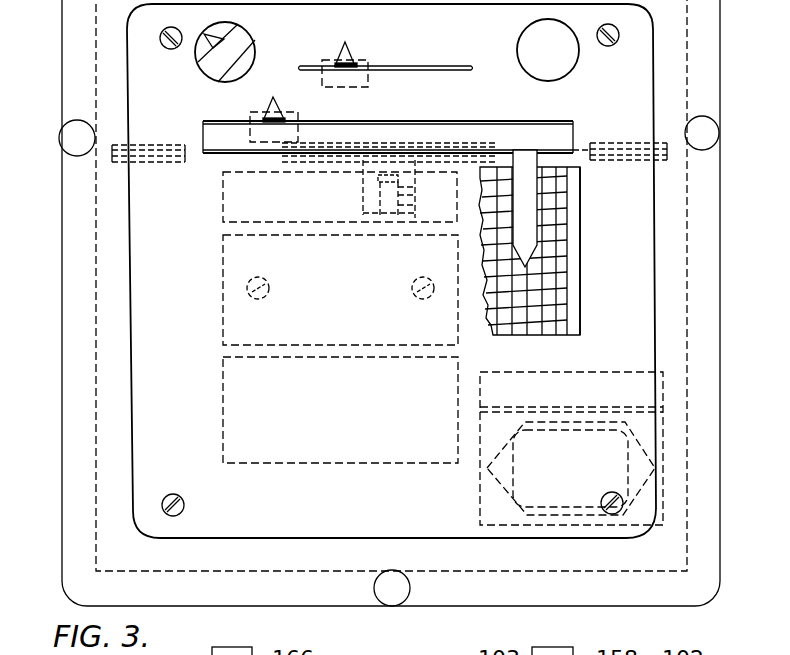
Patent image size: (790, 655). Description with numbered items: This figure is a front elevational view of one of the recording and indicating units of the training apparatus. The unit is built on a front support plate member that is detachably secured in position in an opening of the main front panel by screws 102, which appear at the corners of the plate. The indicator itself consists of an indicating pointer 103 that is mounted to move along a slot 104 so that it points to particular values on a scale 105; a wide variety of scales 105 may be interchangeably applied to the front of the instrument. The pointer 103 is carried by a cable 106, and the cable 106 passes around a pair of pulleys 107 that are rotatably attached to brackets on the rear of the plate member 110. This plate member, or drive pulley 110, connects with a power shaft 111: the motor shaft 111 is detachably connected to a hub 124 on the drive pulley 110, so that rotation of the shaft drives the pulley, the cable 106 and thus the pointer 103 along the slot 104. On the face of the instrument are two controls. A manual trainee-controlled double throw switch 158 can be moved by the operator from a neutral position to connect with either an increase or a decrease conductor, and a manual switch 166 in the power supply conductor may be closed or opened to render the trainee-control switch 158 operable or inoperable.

The screws 102 is at (77, 148).
The indicating pointer 103 is at (573, 194).
The slot 104 is at (543, 148).
The scale 105 is at (580, 286).
The cable 106 is at (578, 147).
The pulleys 107 is at (155, 145).
The drive pulley 110 is at (422, 147).
The motor shaft 111 is at (377, 200).
The hub 124 is at (363, 183).
The trainee-controlled double throw switch 158 is at (527, 33).
The manual switch 166 is at (255, 50).